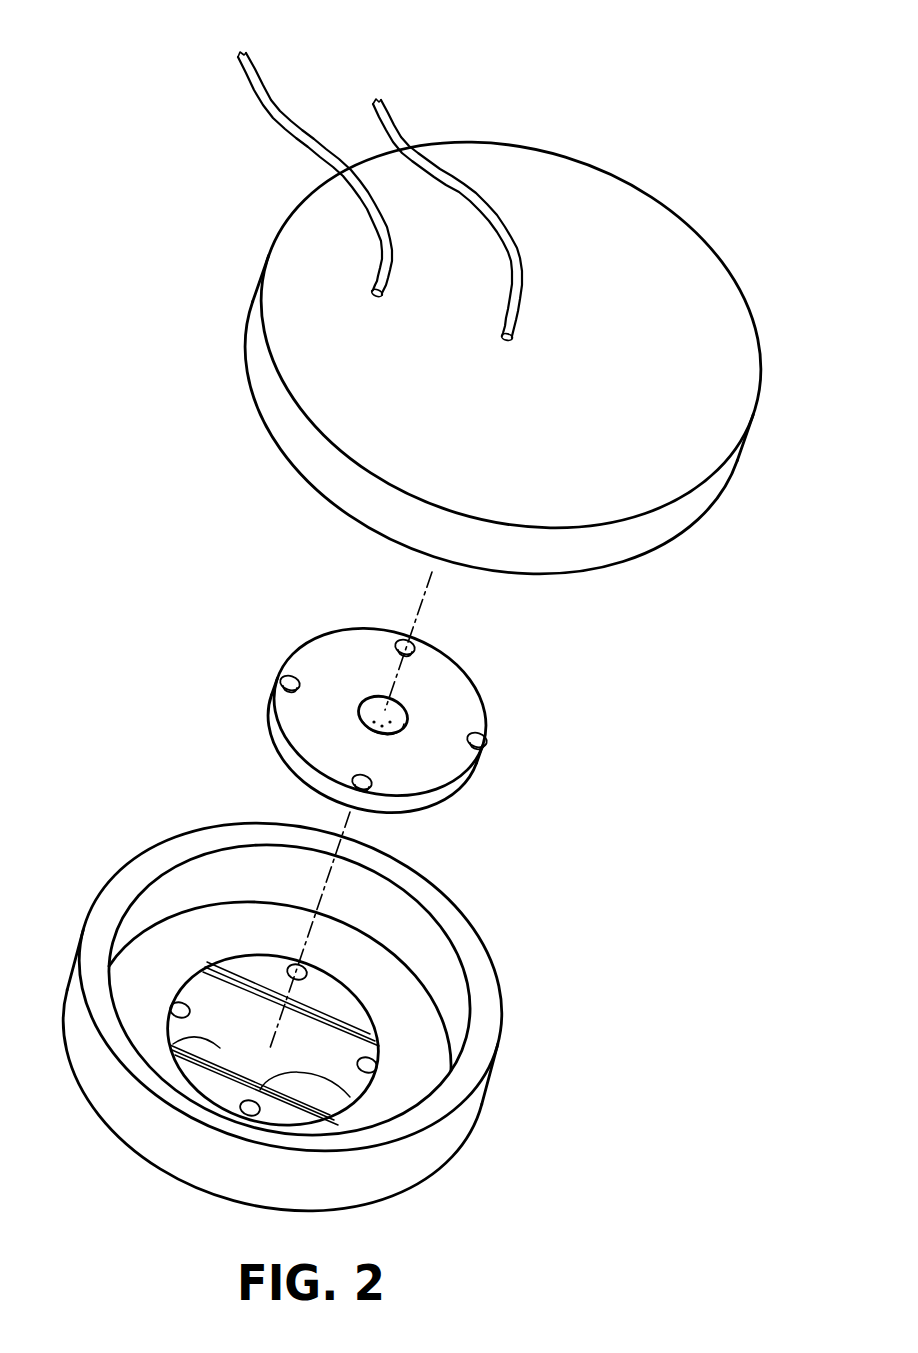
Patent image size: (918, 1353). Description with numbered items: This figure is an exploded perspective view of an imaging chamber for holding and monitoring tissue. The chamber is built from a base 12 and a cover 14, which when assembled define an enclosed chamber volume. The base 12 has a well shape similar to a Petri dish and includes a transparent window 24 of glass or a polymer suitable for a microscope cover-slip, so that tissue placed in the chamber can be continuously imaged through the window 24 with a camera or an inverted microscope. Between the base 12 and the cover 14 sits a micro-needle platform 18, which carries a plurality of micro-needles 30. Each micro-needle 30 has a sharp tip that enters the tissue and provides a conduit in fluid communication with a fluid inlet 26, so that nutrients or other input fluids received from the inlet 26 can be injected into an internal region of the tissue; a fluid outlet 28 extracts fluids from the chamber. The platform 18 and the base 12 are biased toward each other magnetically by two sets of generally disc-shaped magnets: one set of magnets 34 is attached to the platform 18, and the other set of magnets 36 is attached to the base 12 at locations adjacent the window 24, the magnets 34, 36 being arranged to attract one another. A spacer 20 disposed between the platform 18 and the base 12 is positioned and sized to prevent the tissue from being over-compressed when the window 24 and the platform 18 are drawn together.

The base 12 is at (298, 1013).
The cover 14 is at (667, 248).
The micro-needle platform 18 is at (375, 714).
The spacer 20 is at (347, 807).
The transparent window 24 is at (222, 1050).
The fluid inlet 26 is at (440, 163).
The fluid outlet 28 is at (288, 115).
The micro-needles 30 is at (357, 702).
The magnets 34 is at (400, 637).
The magnets 36 is at (290, 963).